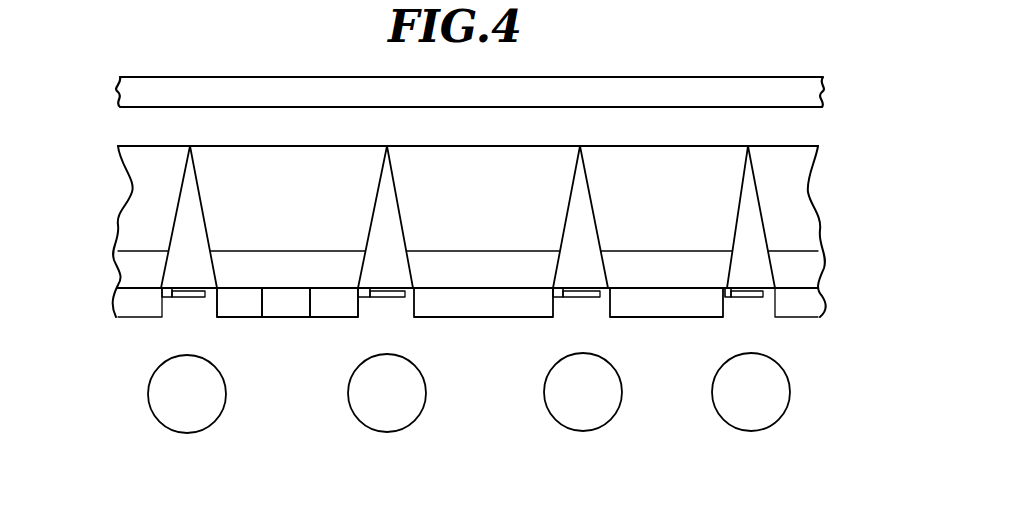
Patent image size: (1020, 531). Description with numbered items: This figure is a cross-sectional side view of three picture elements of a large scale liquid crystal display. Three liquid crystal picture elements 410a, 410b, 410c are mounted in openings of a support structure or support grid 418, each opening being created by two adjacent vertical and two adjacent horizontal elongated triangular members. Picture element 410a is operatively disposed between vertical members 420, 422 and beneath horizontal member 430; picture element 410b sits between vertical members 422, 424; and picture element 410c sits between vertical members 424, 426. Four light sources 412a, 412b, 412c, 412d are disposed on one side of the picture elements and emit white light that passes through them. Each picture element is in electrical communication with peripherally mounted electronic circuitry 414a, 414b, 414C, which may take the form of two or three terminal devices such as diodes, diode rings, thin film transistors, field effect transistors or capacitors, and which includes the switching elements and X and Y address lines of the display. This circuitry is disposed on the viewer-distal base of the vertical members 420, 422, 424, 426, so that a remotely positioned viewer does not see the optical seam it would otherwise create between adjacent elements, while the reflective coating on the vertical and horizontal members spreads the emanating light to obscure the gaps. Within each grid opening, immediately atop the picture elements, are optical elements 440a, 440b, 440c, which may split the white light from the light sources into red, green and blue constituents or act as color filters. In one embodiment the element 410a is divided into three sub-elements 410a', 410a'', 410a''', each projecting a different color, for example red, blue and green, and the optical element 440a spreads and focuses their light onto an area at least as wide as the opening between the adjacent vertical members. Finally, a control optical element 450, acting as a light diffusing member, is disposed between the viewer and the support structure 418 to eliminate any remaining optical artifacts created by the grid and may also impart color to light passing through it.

The control optical element 450 is at (825, 92).
The horizontal member 430 is at (120, 190).
The support structure 418 is at (812, 190).
The optical element 440a is at (280, 273).
The optical element 440b is at (486, 278).
The optical element 440c is at (670, 273).
The sub-element 410a' is at (215, 321).
The sub-element 410a'' is at (296, 322).
The sub-element 410a''' is at (333, 265).
The liquid crystal picture element 410a is at (287, 355).
The liquid crystal picture element 410b is at (462, 318).
The liquid crystal picture element 410c is at (652, 318).
The electronic circuitry 414a is at (382, 300).
The electronic circuitry 414b is at (577, 300).
The electronic circuitry 414C is at (745, 300).
The vertical member 420 is at (176, 268).
The vertical member 422 is at (378, 265).
The vertical member 424 is at (566, 265).
The vertical member 426 is at (736, 265).
The light source 412a is at (214, 424).
The light source 412b is at (414, 422).
The light source 412c is at (609, 423).
The light source 412d is at (782, 416).